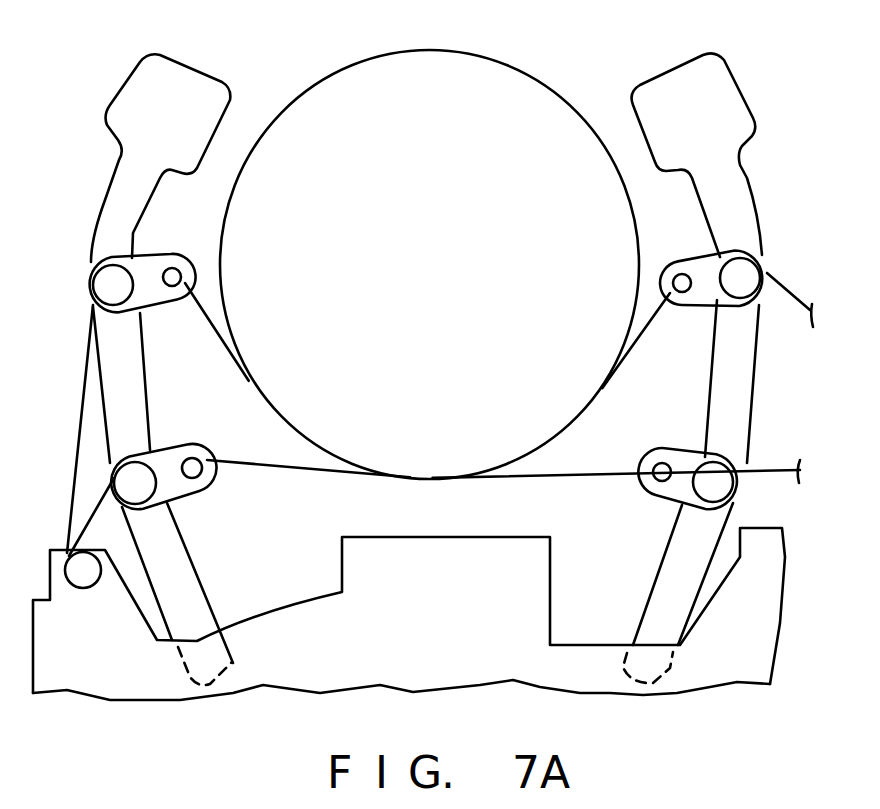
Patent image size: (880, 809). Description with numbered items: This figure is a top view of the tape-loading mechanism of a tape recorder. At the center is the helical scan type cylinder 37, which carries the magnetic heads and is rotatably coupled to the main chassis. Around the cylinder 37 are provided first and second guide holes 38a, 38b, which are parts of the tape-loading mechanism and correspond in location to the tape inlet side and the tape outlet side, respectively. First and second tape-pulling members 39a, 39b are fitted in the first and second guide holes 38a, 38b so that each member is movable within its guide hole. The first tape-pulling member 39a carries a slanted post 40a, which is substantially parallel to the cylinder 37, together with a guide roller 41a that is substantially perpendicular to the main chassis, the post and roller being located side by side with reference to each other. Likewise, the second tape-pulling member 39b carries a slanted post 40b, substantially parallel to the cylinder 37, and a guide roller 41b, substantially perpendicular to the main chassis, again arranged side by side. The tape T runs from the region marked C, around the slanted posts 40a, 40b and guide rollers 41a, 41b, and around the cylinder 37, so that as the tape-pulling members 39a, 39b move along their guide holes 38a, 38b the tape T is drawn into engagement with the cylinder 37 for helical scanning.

The helical scan type cylinder 37 is at (540, 100).
The first guide hole 38a is at (138, 368).
The second guide hole 38b is at (746, 360).
The first tape-pulling member 39a is at (181, 494).
The second tape-pulling member 39b is at (672, 500).
The slanted post 40a is at (190, 466).
The slanted post 40b is at (655, 475).
The guide roller 41a is at (127, 482).
The guide roller 41b is at (727, 491).
The tape T is at (590, 462).
The cassette C is at (75, 697).